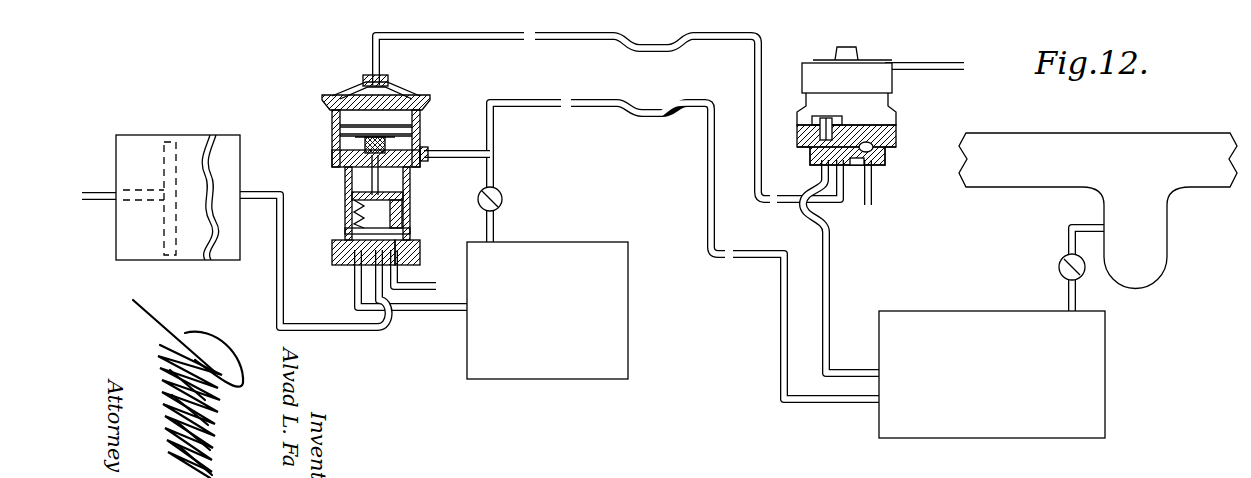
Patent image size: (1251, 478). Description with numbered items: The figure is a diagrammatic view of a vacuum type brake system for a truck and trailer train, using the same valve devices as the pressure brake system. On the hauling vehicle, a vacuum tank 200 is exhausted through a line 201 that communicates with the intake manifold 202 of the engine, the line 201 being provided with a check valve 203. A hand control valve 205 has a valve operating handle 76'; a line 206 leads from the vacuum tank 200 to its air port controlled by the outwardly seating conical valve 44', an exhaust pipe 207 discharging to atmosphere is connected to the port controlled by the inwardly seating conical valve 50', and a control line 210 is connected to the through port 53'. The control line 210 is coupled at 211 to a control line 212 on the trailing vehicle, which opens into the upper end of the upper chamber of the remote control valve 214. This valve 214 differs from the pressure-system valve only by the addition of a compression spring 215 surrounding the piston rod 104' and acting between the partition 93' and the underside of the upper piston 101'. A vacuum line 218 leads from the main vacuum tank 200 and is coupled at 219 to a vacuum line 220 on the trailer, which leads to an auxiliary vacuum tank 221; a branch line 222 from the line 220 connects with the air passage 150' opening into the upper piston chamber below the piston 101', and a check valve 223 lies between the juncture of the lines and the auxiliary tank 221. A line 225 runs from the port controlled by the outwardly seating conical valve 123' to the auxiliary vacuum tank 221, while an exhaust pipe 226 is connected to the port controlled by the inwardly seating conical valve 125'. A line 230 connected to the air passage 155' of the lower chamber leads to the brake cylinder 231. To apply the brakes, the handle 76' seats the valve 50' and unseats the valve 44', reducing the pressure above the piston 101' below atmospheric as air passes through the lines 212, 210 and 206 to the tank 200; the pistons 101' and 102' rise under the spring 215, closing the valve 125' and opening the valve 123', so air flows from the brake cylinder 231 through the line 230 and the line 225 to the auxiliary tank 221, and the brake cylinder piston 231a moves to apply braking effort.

The vacuum tank 200 is at (992, 374).
The line 201 is at (1067, 238).
The intake manifold 202 is at (1098, 211).
The check valve 203 is at (1058, 268).
The hand control valve 205 is at (846, 106).
The line 206 is at (832, 257).
The exhaust pipe 207 is at (876, 194).
The control line 210 is at (786, 204).
The coupling 211 is at (637, 36).
The control line 212 is at (459, 33).
The remote control valve 214 is at (325, 122).
The compression spring 215 is at (333, 149).
The vacuum line 218 is at (783, 325).
The coupling 219 is at (665, 107).
The vacuum line 220 is at (521, 104).
The auxiliary vacuum tank 221 is at (547, 310).
The branch line 222 is at (446, 154).
The check valve 223 is at (505, 194).
The line 225 is at (355, 283).
The exhaust pipe 226 is at (400, 281).
The line 230 is at (278, 291).
The brake cylinder 231 is at (209, 150).
The brake cylinder piston 231a is at (176, 186).
The outwardly seating conical valve 44' is at (802, 141).
The inwardly seating conical valve 50' is at (900, 153).
The through port 53' is at (896, 171).
The valve operating handle 76' is at (924, 48).
The partition 93' is at (352, 160).
The upper piston 101' is at (395, 99).
The piston 102' is at (408, 187).
The piston rod 104' is at (353, 197).
The outwardly seating conical valve 123' is at (343, 257).
The inwardly seating conical valve 125' is at (429, 252).
The air passage 150' is at (413, 131).
The air passage 155' is at (351, 220).